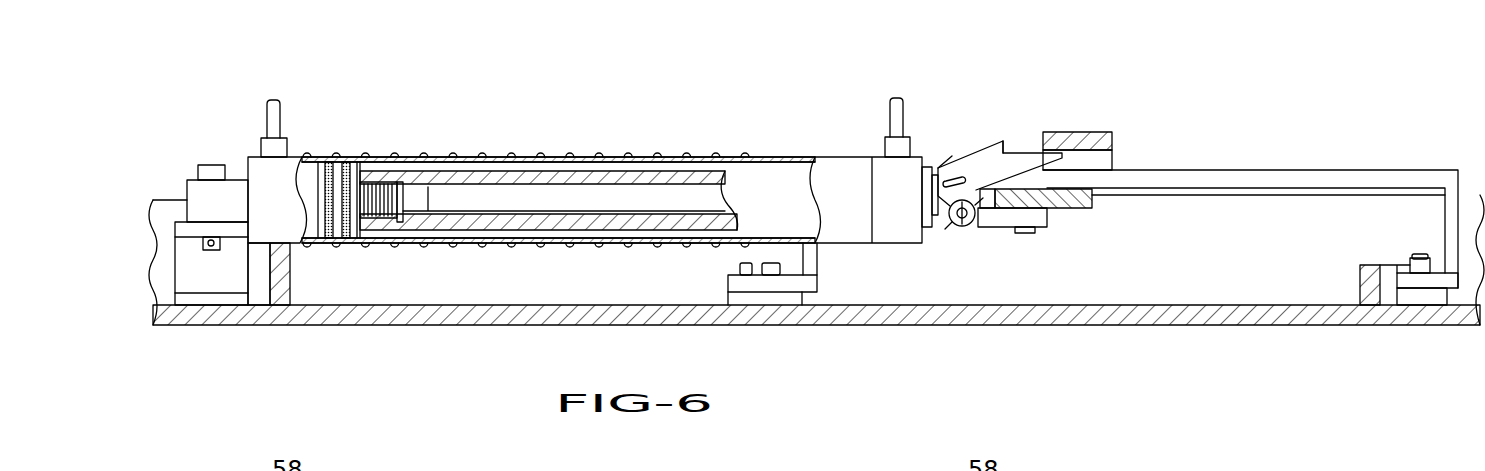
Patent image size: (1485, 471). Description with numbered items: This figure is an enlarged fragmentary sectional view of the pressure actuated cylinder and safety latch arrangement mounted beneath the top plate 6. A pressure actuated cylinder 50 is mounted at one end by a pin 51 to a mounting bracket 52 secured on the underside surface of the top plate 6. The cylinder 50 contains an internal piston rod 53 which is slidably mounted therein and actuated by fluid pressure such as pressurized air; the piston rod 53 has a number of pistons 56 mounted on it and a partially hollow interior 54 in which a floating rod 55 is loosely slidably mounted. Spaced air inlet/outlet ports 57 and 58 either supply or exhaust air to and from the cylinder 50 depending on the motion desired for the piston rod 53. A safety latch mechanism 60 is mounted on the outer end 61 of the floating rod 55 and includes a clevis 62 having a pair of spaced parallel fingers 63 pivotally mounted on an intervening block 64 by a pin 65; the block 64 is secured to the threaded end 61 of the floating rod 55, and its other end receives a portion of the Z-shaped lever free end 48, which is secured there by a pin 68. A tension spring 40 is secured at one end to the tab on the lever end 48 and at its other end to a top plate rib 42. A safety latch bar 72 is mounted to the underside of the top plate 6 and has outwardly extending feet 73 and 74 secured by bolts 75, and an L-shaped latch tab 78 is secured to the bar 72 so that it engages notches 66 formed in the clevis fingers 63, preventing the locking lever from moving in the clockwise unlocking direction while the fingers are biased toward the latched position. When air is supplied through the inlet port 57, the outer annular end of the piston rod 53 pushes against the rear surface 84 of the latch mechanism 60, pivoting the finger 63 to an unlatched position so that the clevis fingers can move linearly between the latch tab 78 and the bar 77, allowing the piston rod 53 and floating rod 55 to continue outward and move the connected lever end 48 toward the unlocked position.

The top plate 6 is at (1112, 320).
The tension spring 40 is at (396, 155).
The top plate rib 42 is at (291, 272).
The free end of lever 48 is at (1077, 207).
The pressure actuated cylinder 50 is at (781, 156).
The pin 51 is at (208, 163).
The mounting bracket 52 is at (210, 275).
The piston rod 53 is at (538, 176).
The partially hollow interior 54 is at (476, 190).
The floating rod 55 is at (588, 205).
The pistons 56 is at (340, 233).
The air inlet/outlet port 57 is at (281, 116).
The air inlet/outlet port 58 is at (890, 115).
The safety latch mechanism 60 is at (970, 166).
The outer end of floating rod 61 is at (950, 228).
The clevis 62 is at (973, 150).
The clevis fingers 63 is at (953, 163).
The block 64 is at (1046, 220).
The pin 65 is at (966, 226).
The notches 66 is at (1007, 147).
The pin 68 is at (1024, 234).
The safety latch bar 72 is at (1198, 172).
The foot 73 is at (733, 283).
The foot 74 is at (1422, 282).
The bolts 75 is at (770, 276).
The bar 77 is at (1280, 178).
The latch tab 78 is at (1088, 133).
The rear surface of latch mechanism 84 is at (945, 184).